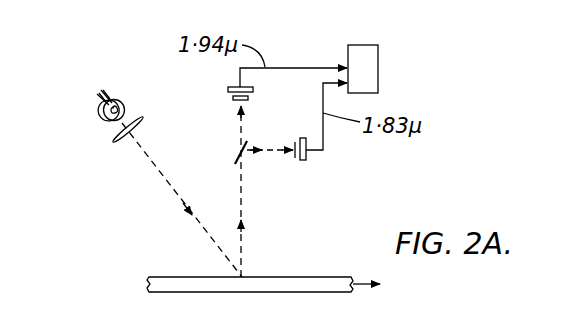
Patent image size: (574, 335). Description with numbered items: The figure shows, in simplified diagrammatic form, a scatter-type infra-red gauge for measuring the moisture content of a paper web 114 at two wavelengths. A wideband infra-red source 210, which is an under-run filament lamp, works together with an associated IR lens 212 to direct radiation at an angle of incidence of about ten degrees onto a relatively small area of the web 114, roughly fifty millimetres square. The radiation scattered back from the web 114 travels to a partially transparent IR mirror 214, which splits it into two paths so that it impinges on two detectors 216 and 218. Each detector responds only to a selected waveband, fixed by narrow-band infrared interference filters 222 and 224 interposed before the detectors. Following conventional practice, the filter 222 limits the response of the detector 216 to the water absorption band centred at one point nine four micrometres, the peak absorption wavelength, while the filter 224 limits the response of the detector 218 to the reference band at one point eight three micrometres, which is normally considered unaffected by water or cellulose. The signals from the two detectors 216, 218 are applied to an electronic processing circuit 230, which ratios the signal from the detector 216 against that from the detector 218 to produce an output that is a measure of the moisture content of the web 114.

The web 114 is at (190, 282).
The wideband infra-red source 210 is at (105, 117).
The IR lens 212 is at (127, 142).
The partially transparent IR mirror 214 is at (236, 154).
The detector 216 is at (232, 88).
The detector 218 is at (307, 160).
The narrow-band infrared interference filter 222 is at (235, 104).
The narrow-band infrared interference filter 224 is at (293, 159).
The electronic processing circuit 230 is at (379, 70).